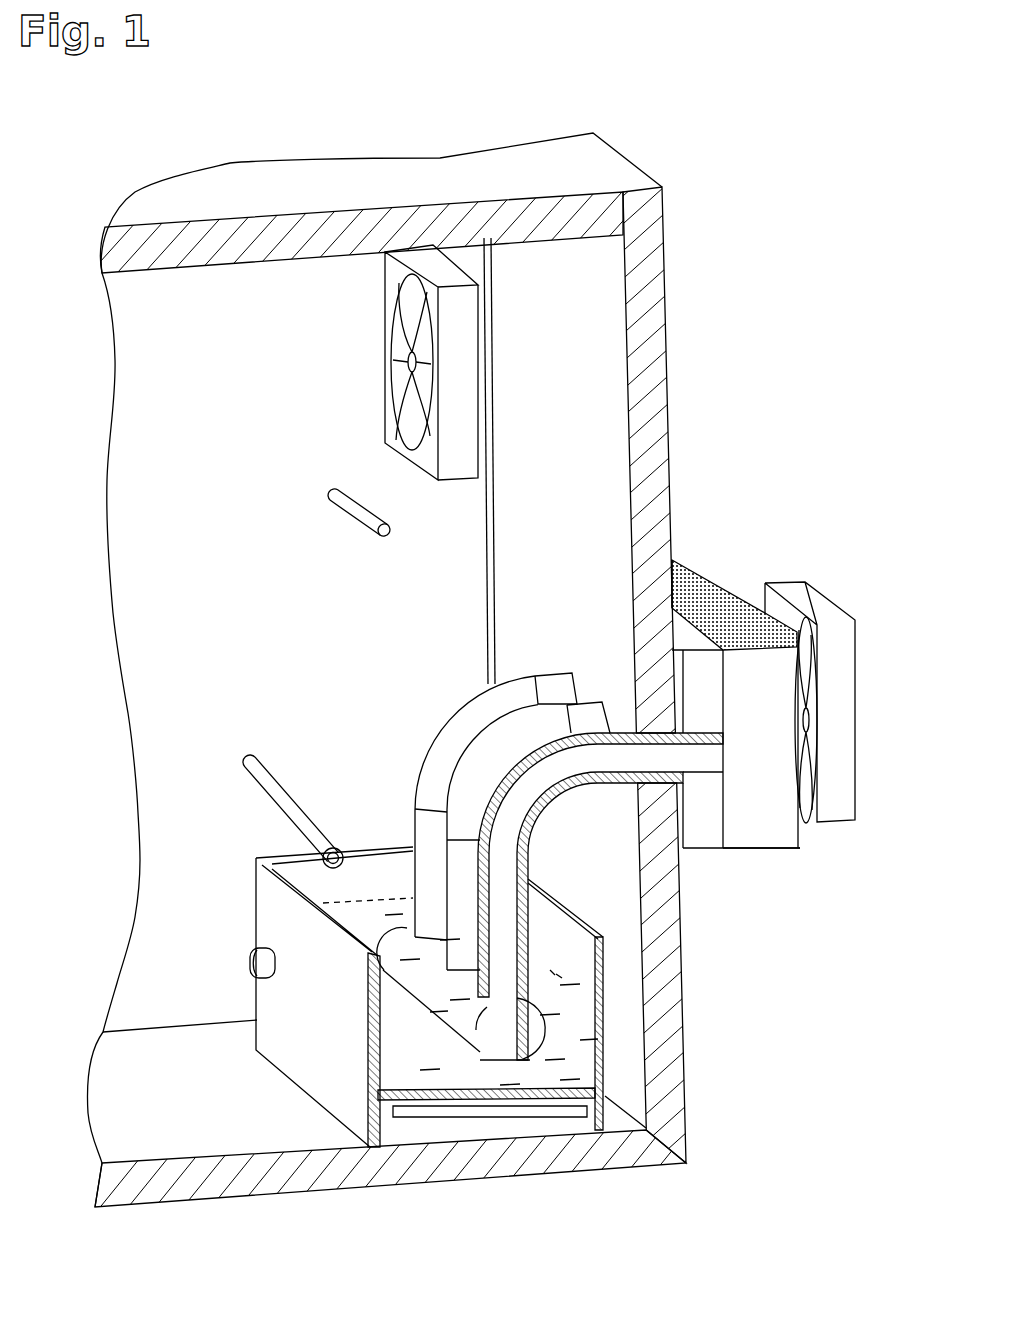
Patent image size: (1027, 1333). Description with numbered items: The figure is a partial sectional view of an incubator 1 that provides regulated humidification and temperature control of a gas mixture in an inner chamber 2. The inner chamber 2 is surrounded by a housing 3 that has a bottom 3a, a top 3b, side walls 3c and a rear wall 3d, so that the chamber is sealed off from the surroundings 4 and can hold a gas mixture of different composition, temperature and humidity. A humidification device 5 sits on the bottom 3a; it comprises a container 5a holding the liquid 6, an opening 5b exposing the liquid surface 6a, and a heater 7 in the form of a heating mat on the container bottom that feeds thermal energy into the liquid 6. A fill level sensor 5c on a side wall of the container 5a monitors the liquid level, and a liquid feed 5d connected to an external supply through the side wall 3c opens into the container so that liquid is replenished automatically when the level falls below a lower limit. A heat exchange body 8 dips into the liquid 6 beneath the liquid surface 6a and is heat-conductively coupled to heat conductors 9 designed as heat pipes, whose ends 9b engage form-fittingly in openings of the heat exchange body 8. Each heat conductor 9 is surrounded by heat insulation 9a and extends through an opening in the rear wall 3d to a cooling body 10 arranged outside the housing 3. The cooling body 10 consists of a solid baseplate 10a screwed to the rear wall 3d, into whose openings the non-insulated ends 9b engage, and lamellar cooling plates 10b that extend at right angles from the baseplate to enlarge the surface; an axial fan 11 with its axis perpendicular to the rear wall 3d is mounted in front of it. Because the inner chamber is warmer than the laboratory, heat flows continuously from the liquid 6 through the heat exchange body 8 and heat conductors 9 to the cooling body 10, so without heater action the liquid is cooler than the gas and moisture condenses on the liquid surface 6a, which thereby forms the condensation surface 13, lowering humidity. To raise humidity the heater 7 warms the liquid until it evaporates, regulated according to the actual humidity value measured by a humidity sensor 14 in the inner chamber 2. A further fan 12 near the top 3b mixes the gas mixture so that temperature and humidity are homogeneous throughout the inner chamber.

The incubator 1 is at (735, 133).
The inner chamber 2 is at (216, 671).
The housing 3 is at (425, 182).
The bottom 3a is at (610, 1147).
The top 3b is at (198, 247).
The side wall 3c is at (256, 341).
The rear wall 3d is at (652, 318).
The surroundings 4 is at (714, 235).
The humidification device 5 is at (248, 930).
The container 5a is at (272, 998).
The opening 5b is at (382, 893).
The fill level sensor 5c is at (250, 963).
The liquid feed 5d is at (290, 802).
The liquid 6 is at (413, 1048).
The liquid surface 6a is at (553, 980).
The heater 7 is at (440, 1118).
The heat exchange body 8 is at (540, 1020).
The heat conductor 9 is at (503, 780).
The heat insulation 9a is at (538, 820).
The end 9b is at (705, 748).
The cooling body 10 is at (712, 543).
The baseplate 10a is at (705, 681).
The lamellar cooling plates 10b is at (778, 825).
The axial fan 11 is at (790, 588).
The further fan 12 is at (386, 409).
The condensation surface 13 is at (559, 976).
The humidity sensor 14 is at (340, 508).